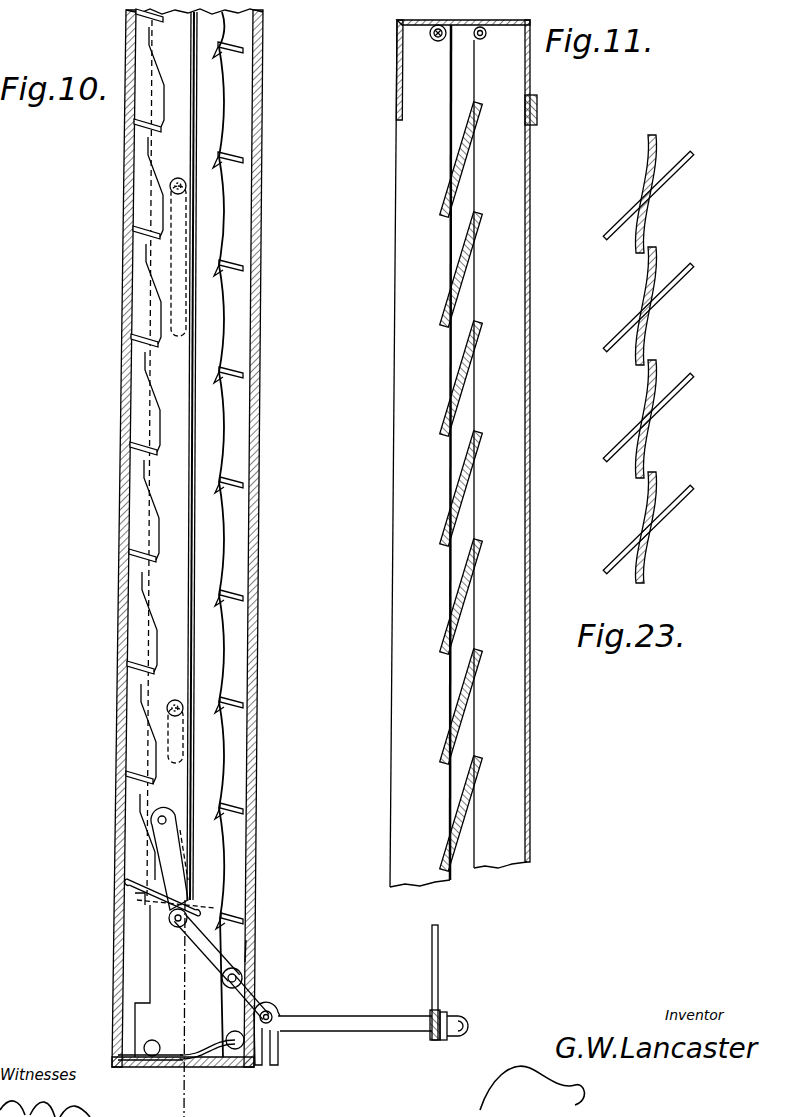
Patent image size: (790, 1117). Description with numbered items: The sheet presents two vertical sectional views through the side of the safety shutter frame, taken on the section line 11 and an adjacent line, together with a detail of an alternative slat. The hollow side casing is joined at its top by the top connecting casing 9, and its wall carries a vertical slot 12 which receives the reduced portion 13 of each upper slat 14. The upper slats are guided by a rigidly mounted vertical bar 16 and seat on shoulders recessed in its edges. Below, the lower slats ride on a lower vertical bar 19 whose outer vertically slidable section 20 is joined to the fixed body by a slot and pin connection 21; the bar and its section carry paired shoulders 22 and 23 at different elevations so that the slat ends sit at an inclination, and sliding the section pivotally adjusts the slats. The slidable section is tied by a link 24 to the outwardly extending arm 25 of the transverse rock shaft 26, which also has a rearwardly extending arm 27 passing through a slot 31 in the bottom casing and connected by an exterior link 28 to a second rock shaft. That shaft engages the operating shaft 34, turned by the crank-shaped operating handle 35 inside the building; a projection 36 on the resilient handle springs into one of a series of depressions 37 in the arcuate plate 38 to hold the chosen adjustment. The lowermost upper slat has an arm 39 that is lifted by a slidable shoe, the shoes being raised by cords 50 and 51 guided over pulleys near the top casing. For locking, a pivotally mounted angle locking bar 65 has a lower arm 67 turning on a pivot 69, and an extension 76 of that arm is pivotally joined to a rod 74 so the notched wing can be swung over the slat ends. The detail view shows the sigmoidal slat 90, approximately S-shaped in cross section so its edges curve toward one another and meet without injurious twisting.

In FIG. 11, the top connecting casing 9 is at (530, 77).
In FIG. 11, the section line 11 is at (532, 237).
In FIG. 10, the vertical slot 12 is at (204, 450).
In FIG. 11, the vertical slot 12 is at (450, 242).
In FIG. 11, the reduced portion 13 is at (448, 383).
In FIG. 11, the upper slat 14 is at (448, 408).
In FIG. 10, the vertical bar 16 is at (128, 785).
In FIG. 10, the lower vertical bar 19 is at (220, 648).
In FIG. 10, the vertically slidable section 20 is at (160, 596).
In FIG. 10, the slot and pin connection 21 is at (170, 188).
In FIG. 10, the shoulder 22 is at (236, 606).
In FIG. 10, the shoulder 23 is at (146, 673).
In FIG. 10, the link 24 is at (160, 858).
In FIG. 10, the outwardly extending arm 25 is at (210, 950).
In FIG. 10, the transverse rock shaft 26 is at (248, 952).
In FIG. 10, the rearwardly extending arm 27 is at (252, 1000).
In FIG. 10, the exterior link 28 is at (283, 1024).
In FIG. 10, the slot 31 is at (248, 974).
In FIG. 10, the operating shaft 34 is at (357, 1026).
In FIG. 10, the operating handle 35 is at (466, 1020).
In FIG. 10, the projection 36 is at (438, 1012).
In FIG. 10, the depression 37 is at (430, 1032).
In FIG. 10, the arcuate plate 38 is at (432, 945).
In FIG. 10, the arm 39 is at (133, 898).
In FIG. 11, the cord 50 is at (474, 38).
In FIG. 11, the cord 51 is at (429, 35).
In FIG. 10, the angle locking bar 65 is at (128, 632).
In FIG. 10, the lower arm 67 is at (123, 1063).
In FIG. 10, the pivot 69 is at (156, 1060).
In FIG. 10, the rod 74 is at (232, 1050).
In FIG. 10, the extension 76 is at (200, 1055).
In FIG. 23, the sigmoidal slat 90 is at (652, 315).